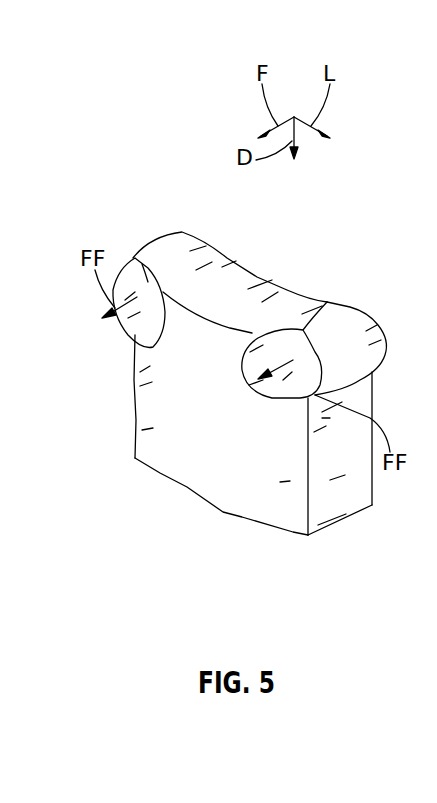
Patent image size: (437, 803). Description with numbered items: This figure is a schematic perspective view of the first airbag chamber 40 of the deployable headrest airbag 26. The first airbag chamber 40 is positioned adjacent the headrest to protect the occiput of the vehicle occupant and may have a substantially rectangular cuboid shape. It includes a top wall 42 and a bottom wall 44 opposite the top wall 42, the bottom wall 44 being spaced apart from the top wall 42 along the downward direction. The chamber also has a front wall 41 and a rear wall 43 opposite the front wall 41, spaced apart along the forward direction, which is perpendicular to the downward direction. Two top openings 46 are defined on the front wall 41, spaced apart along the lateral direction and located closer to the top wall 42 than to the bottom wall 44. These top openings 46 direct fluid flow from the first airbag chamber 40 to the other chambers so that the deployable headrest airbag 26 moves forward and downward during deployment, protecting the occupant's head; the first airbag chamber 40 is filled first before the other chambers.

The deployable headrest airbag 26 is at (355, 208).
The first airbag chamber 40 is at (288, 298).
The front wall 41 is at (210, 467).
The top wall 42 is at (227, 270).
The rear wall 43 is at (348, 303).
The bottom wall 44 is at (240, 523).
The top openings 46 is at (135, 258).